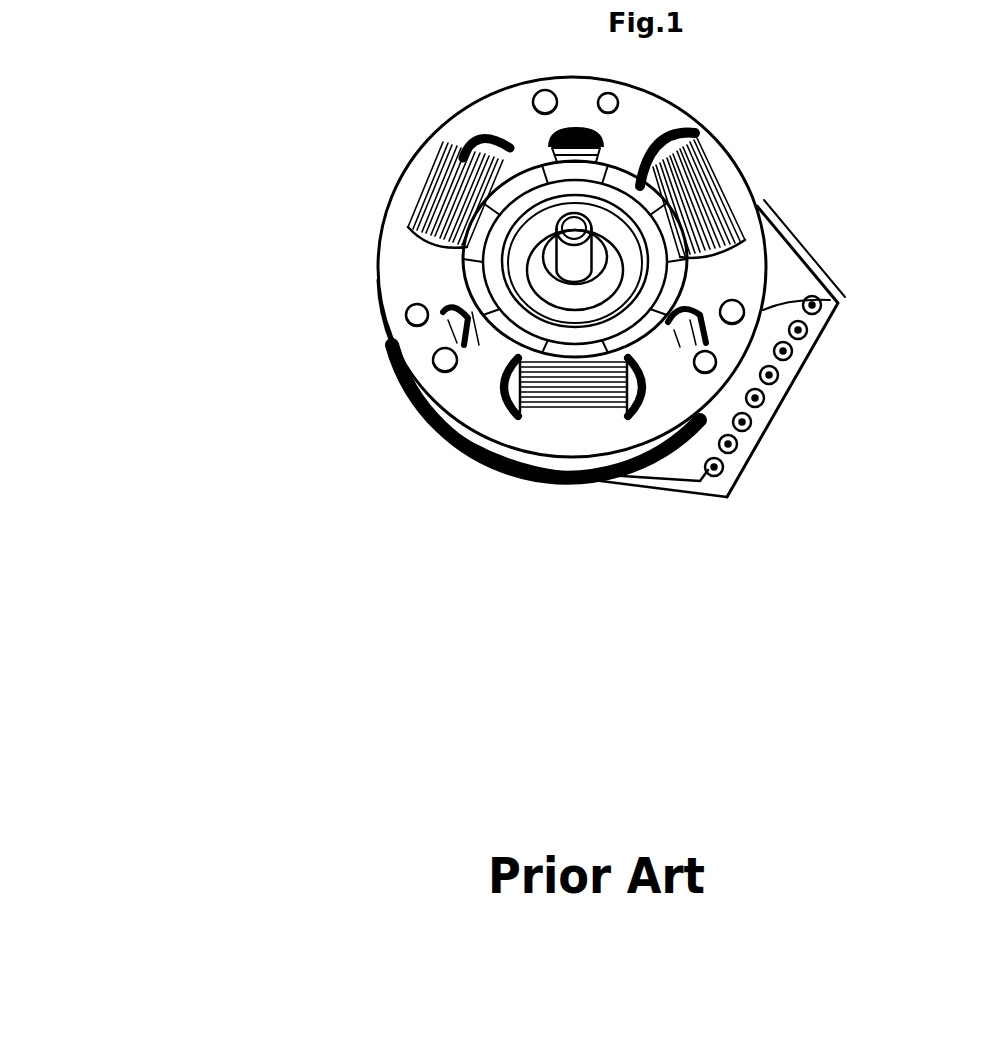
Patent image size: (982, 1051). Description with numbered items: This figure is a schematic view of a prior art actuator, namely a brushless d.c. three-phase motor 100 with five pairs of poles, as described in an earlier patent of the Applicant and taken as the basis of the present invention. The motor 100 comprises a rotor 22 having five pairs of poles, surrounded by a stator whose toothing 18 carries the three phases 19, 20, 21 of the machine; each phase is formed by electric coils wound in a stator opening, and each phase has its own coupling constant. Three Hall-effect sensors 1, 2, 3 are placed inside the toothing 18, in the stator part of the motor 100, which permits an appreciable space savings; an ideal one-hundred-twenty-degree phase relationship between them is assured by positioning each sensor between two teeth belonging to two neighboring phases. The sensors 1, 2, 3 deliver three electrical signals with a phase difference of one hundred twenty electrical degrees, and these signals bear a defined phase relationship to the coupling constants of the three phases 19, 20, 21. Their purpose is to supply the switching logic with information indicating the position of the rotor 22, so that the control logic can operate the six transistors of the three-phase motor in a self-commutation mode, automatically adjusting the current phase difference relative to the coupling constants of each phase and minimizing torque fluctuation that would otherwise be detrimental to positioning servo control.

The three-phase motor 100 is at (255, 333).
The Hall-effect sensor 1 is at (590, 128).
The Hall-effect sensor 2 is at (840, 303).
The Hall-effect sensor 3 is at (405, 385).
The toothing 18 is at (480, 455).
The phase 19 is at (472, 183).
The phase 20 is at (712, 212).
The phase 21 is at (605, 387).
The rotor 22 is at (697, 133).